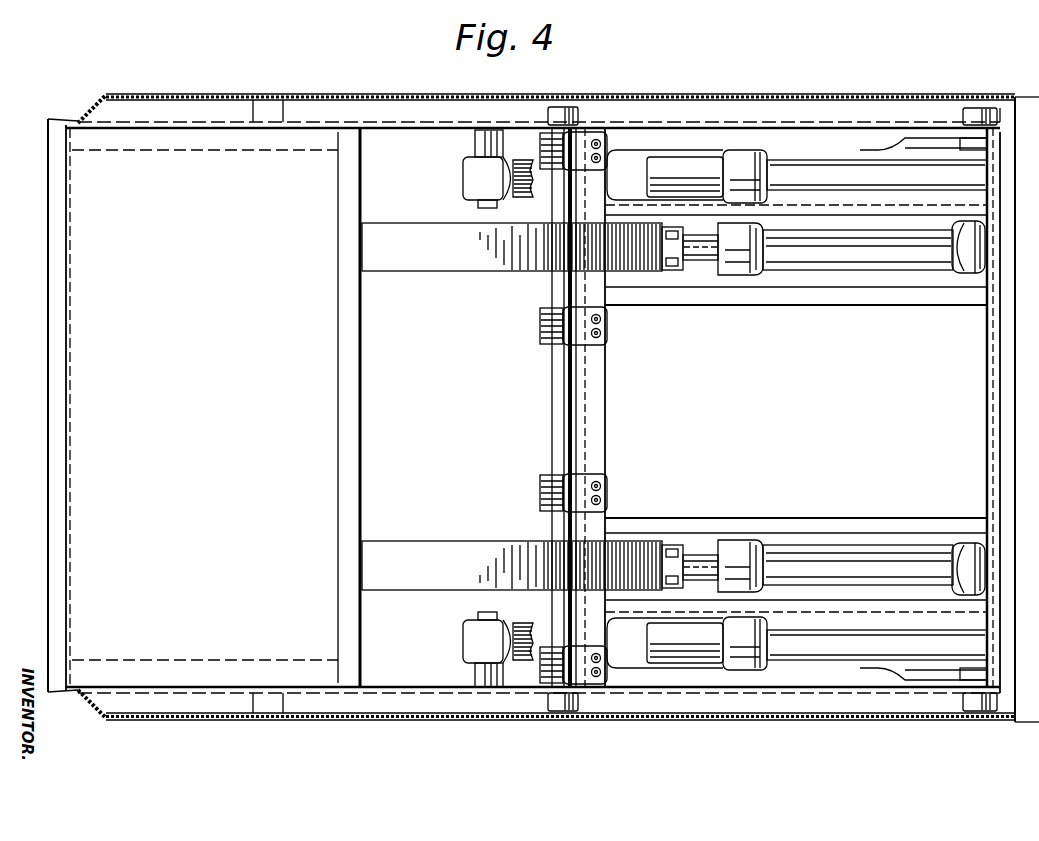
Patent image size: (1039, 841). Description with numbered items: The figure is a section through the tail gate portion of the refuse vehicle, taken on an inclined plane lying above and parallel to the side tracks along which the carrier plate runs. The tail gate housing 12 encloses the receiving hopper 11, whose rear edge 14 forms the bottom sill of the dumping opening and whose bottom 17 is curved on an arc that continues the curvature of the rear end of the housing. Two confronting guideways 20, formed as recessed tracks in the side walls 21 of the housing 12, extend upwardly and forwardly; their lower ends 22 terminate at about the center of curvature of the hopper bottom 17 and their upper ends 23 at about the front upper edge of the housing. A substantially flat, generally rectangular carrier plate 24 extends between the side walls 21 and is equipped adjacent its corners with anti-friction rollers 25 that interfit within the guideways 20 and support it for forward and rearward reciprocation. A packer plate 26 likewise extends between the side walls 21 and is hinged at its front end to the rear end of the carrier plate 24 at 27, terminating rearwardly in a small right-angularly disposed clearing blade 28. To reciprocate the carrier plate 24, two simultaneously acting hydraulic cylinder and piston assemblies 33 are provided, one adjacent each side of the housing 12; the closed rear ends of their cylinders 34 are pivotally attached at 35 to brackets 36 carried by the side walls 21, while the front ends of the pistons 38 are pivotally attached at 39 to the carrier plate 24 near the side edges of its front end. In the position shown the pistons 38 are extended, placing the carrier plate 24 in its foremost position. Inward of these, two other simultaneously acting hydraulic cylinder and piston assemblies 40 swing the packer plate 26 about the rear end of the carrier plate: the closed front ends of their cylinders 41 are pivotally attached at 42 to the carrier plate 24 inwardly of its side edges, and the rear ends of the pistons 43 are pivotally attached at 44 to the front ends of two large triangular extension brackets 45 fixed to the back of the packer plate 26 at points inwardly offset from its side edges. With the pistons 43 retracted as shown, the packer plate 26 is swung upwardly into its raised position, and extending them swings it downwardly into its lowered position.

The receiving hopper 11 is at (226, 398).
The tail gate housing 12 is at (726, 94).
The rear edge of the hopper 14 is at (56, 370).
The bottom of the hopper 17 is at (110, 451).
The guideways 20 is at (636, 112).
The side walls 21 is at (815, 122).
The lower ends of the guideways 22 is at (312, 99).
The upper ends of the guideways 23 is at (1006, 112).
The carrier plate 24 is at (810, 405).
The anti-friction rollers 25 is at (560, 108).
The packer plate 26 is at (470, 395).
The hinge 27 is at (565, 441).
The clearing blade 28 is at (346, 463).
The hydraulic cylinder and piston assemblies 33 is at (746, 147).
The cylinders 34 is at (676, 165).
The pivotal attachment 35 is at (482, 177).
The brackets 36 is at (480, 146).
The pistons 38 is at (850, 165).
The pivotal attachment 39 is at (972, 149).
The hydraulic cylinder and piston assemblies 40 is at (855, 272).
The cylinders 41 is at (796, 276).
The pivotal attachment 42 is at (968, 276).
The pistons 43 is at (700, 262).
The pivotal attachment 44 is at (668, 270).
The extension brackets 45 is at (512, 268).